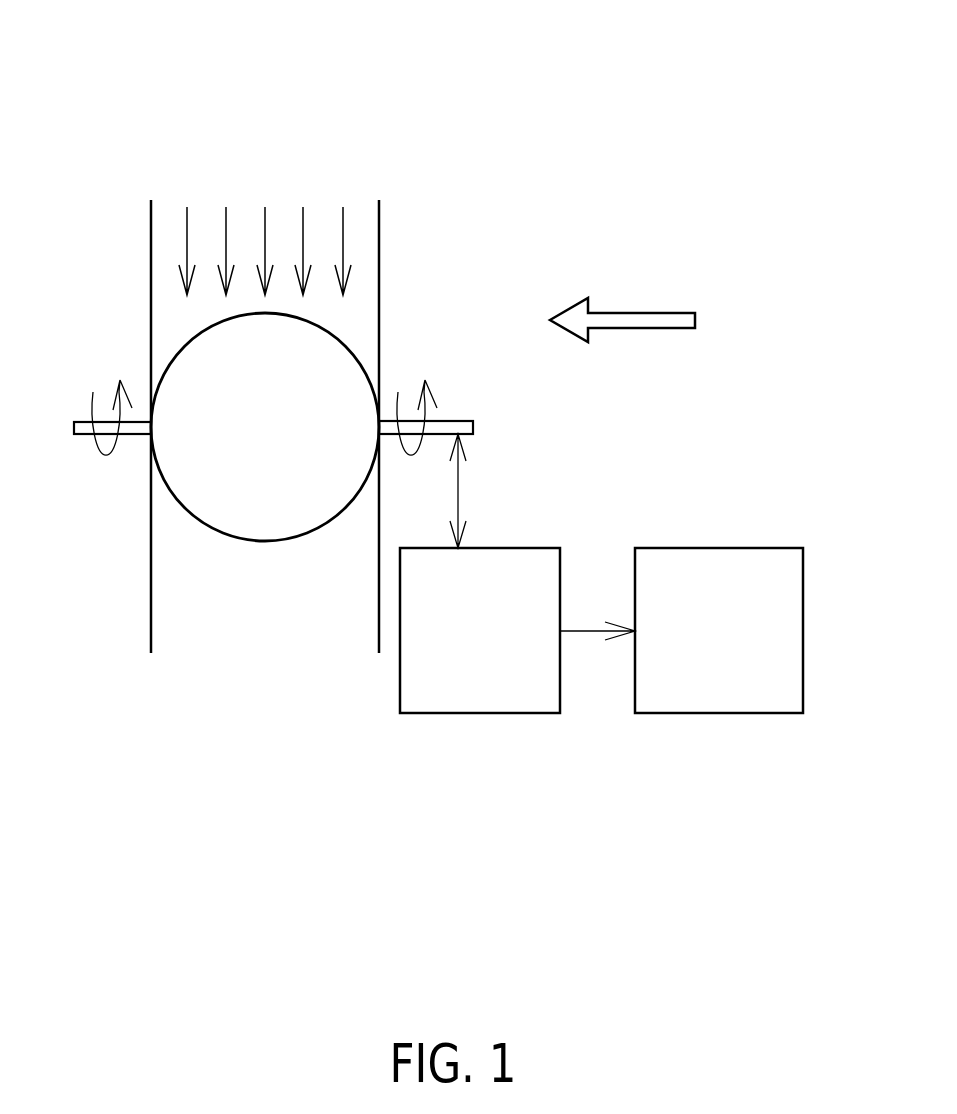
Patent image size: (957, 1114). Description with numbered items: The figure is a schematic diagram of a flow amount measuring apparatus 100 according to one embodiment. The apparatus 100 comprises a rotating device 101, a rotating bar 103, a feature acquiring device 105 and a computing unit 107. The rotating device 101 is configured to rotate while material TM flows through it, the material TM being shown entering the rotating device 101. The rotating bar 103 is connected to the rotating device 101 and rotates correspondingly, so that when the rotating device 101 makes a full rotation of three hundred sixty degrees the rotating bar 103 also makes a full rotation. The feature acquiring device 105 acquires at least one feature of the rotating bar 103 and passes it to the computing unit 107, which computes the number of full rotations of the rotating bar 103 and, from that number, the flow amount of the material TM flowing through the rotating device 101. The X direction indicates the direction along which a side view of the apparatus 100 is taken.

The flow amount measuring apparatus 100 is at (683, 103).
The rotating device 101 is at (286, 442).
The rotating bar 103 is at (466, 421).
The feature acquiring device 105 is at (483, 713).
The computing unit 107 is at (720, 713).
The material TM is at (187, 239).
The X direction X is at (622, 307).